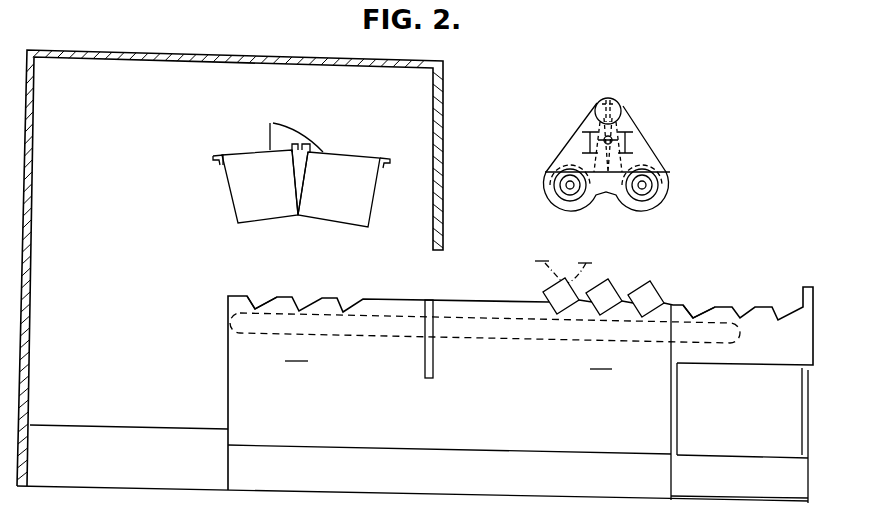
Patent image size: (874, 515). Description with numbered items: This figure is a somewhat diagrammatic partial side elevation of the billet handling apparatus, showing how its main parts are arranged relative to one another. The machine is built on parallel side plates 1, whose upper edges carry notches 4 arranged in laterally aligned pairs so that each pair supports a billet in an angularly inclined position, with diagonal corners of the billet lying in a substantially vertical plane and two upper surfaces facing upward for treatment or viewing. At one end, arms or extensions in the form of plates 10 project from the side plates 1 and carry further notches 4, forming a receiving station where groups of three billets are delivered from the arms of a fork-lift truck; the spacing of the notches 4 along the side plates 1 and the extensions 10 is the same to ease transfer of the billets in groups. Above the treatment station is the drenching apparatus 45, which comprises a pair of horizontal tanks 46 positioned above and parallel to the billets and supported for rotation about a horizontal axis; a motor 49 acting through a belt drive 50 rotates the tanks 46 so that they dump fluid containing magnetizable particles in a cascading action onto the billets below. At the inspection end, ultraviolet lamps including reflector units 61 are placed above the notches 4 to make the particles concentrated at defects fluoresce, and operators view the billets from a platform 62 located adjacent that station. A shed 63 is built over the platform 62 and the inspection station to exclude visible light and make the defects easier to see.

The side plates 1 is at (235, 370).
The notches 4 is at (302, 300).
The plates 10 is at (757, 305).
The apparatus 45 is at (605, 143).
The tanks 46 is at (545, 185).
The motor 49 is at (598, 123).
The belt drive 50 is at (580, 138).
The reflector units 61 is at (237, 190).
The platform 62 is at (105, 425).
The shed 63 is at (36, 162).